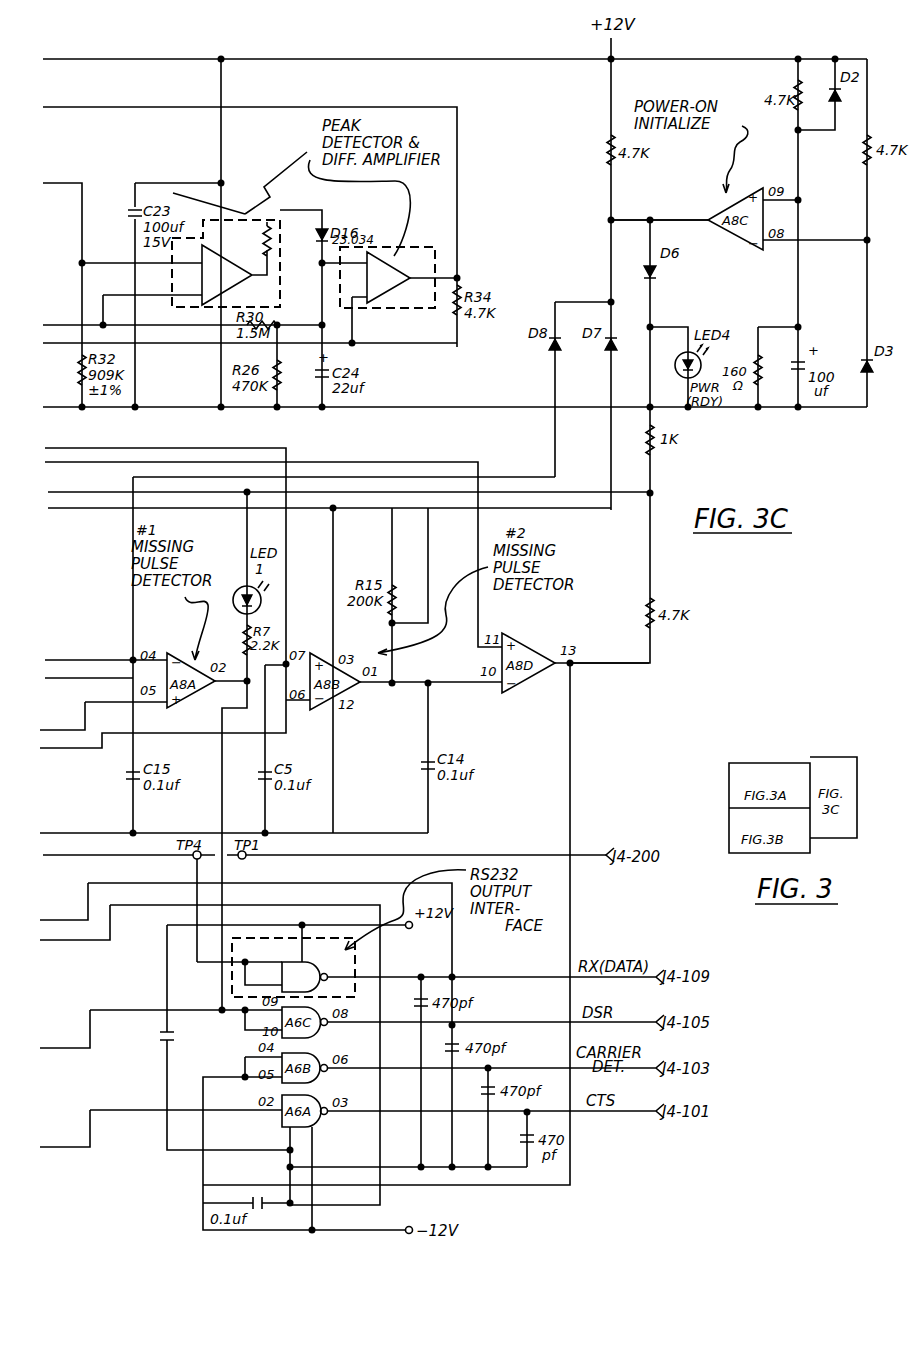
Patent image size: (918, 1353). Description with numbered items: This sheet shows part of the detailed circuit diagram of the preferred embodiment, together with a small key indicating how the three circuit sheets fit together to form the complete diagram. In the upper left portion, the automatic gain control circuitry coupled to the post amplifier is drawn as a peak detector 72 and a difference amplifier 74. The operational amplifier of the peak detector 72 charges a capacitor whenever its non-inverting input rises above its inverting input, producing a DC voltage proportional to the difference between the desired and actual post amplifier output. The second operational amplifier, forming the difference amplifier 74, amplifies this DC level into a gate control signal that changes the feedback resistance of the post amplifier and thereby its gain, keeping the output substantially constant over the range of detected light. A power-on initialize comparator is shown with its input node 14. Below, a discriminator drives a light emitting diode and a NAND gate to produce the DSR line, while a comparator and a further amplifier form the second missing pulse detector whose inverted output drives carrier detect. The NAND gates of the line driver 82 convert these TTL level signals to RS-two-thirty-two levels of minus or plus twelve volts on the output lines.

The power-on initialize input node 14 is at (659, 210).
The peak detector 72 is at (184, 308).
The difference amplifier 74 is at (412, 250).
The line driver 82 is at (358, 959).